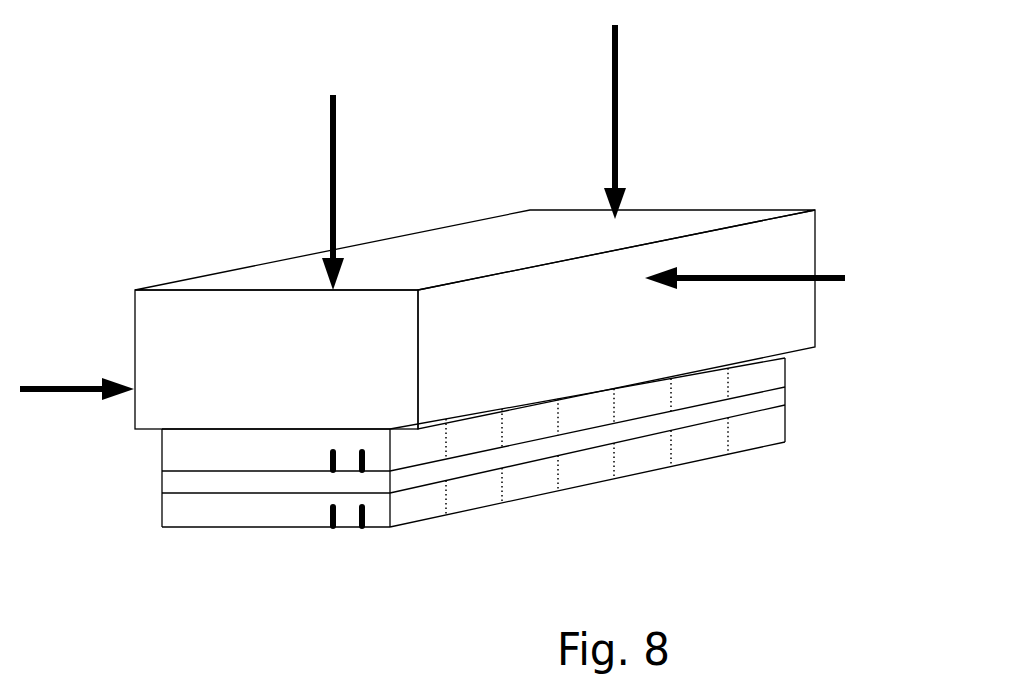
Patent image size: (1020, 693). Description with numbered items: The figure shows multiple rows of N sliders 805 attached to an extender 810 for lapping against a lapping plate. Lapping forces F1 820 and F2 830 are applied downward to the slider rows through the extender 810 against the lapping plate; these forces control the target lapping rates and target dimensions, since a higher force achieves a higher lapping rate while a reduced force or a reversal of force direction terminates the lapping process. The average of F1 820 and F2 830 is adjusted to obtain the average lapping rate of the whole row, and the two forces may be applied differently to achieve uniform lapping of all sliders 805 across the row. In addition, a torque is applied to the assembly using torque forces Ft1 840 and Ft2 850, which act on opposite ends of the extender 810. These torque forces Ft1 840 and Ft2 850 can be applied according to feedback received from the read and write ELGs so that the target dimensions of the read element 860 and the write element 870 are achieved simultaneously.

The sliders 805 is at (785, 373).
The extender 810 is at (475, 319).
The force F1 820 is at (355, 188).
The force F2 830 is at (633, 116).
The torque force Ft1 840 is at (782, 271).
The torque force Ft2 850 is at (77, 431).
The read element 860 is at (316, 518).
The write element 870 is at (343, 531).